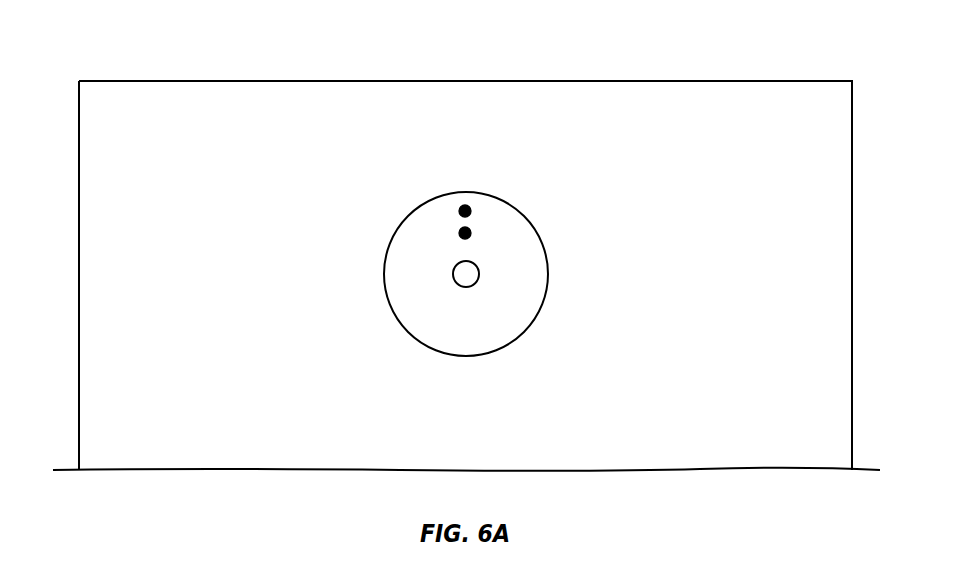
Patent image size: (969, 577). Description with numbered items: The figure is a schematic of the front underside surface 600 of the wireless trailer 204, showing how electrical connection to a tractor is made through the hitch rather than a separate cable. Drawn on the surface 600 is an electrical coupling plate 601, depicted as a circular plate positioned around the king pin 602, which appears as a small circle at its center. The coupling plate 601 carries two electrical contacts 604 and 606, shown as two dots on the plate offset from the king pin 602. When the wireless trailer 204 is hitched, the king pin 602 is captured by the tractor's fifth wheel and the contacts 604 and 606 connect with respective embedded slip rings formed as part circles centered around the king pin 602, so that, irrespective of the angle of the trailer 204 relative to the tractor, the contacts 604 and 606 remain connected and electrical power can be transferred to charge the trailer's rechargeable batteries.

The front underside surface 600 is at (742, 100).
The wireless trailer 204 is at (95, 115).
The electrical coupling plate 601 is at (397, 255).
The king pin 602 is at (460, 278).
The electrical contact 604 is at (458, 235).
The electrical contact 606 is at (471, 211).